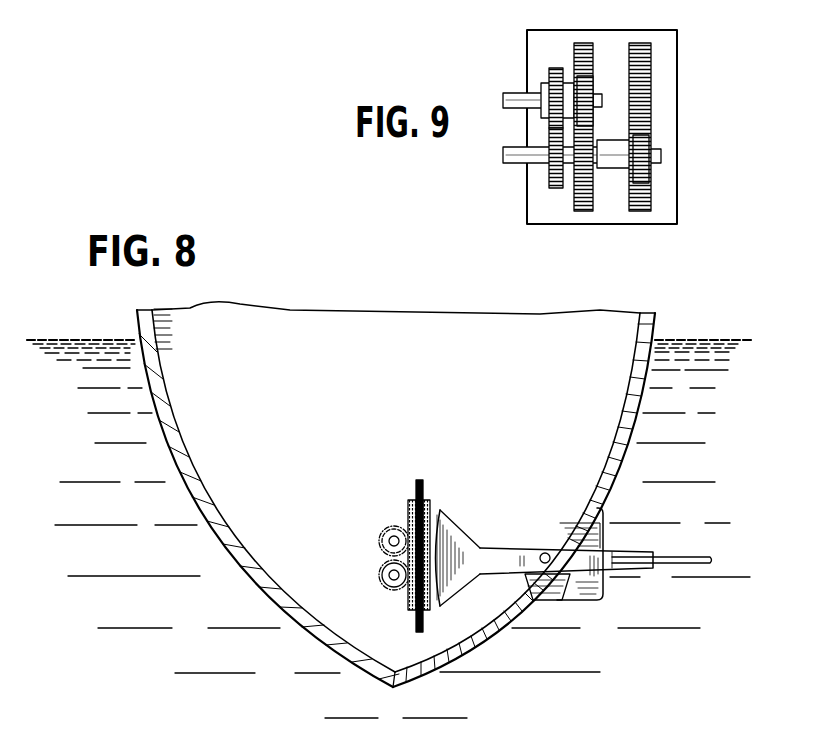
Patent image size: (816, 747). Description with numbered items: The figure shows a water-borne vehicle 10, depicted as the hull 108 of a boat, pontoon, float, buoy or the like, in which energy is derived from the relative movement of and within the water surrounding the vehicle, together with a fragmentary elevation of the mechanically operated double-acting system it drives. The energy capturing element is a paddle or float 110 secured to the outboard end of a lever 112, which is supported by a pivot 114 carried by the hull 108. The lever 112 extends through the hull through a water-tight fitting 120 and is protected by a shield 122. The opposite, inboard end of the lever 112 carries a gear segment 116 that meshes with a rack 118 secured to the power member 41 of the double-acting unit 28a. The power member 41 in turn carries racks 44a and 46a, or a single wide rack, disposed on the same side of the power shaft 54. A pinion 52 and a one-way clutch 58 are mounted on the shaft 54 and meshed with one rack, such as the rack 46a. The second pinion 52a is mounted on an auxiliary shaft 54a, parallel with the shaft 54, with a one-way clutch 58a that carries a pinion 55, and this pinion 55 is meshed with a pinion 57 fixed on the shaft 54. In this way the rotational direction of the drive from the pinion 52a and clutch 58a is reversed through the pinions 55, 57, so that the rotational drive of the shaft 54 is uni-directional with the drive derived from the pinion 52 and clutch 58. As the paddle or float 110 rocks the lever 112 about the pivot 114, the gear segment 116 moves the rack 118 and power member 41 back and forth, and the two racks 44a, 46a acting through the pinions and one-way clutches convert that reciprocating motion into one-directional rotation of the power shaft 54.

In FIG. 8, the vehicle 10 is at (136, 318).
In FIG. 8, the hull 108 is at (655, 323).
In FIG. 9, the power member 41 is at (667, 33).
In FIG. 8, the power member 41 is at (421, 480).
In FIG. 9, the rack 44a is at (583, 42).
In FIG. 8, the rack 44a is at (410, 498).
In FIG. 9, the rack 46a is at (639, 42).
In FIG. 8, the rack 46a is at (411, 499).
In FIG. 9, the second pinion 52a is at (593, 78).
In FIG. 8, the second pinion 52a is at (380, 530).
In FIG. 9, the pinion 52 is at (650, 138).
In FIG. 8, the pinion 52 is at (387, 568).
In FIG. 9, the auxiliary shaft 54a is at (510, 93).
In FIG. 8, the auxiliary shaft 54a is at (389, 542).
In FIG. 9, the power shaft 54 is at (660, 155).
In FIG. 8, the power shaft 54 is at (392, 581).
In FIG. 9, the pinion 55 is at (558, 70).
In FIG. 9, the pinion 57 is at (548, 180).
In FIG. 9, the one-way clutch 58a is at (545, 83).
In FIG. 9, the one-way clutch 58 is at (615, 162).
In FIG. 8, the double-acting unit 28a is at (359, 544).
In FIG. 8, the gear segment 116 is at (437, 507).
In FIG. 8, the rack 118 is at (431, 502).
In FIG. 8, the lever 112 is at (507, 549).
In FIG. 8, the pivot 114 is at (545, 553).
In FIG. 8, the paddle or float 110 is at (700, 557).
In FIG. 8, the water-tight fitting 120 is at (532, 600).
In FIG. 8, the shield 122 is at (595, 600).